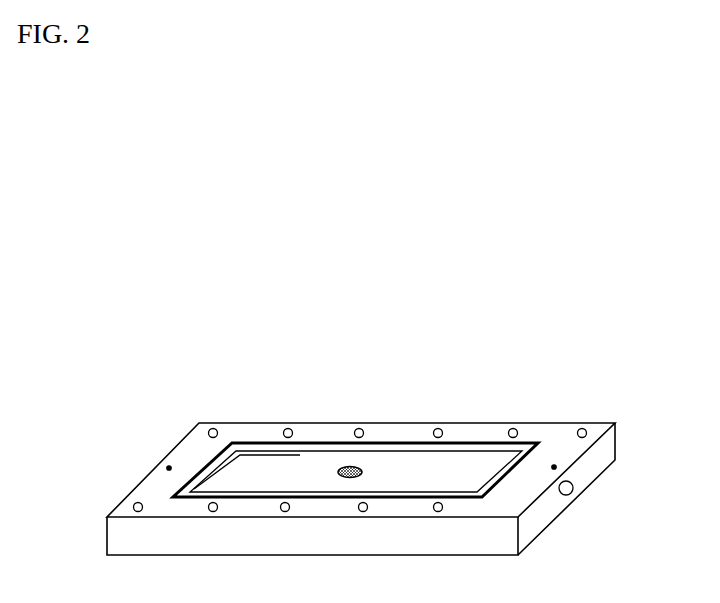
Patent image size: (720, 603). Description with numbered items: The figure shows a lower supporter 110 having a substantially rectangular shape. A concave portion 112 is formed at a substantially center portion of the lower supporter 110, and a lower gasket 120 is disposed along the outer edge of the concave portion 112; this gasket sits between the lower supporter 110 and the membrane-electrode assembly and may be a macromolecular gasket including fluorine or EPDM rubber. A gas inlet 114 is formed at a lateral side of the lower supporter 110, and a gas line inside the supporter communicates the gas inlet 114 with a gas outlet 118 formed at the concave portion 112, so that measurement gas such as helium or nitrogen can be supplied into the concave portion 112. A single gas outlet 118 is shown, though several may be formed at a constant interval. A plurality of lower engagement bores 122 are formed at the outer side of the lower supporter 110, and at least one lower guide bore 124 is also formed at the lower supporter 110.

The lower supporter 110 is at (139, 426).
The concave portion 112 is at (408, 465).
The gas inlet 114 is at (573, 488).
The gas outlet 118 is at (345, 466).
The lower gasket 120 is at (482, 440).
The lower engagement bores 122 is at (583, 428).
The lower guide bore 124 is at (554, 467).